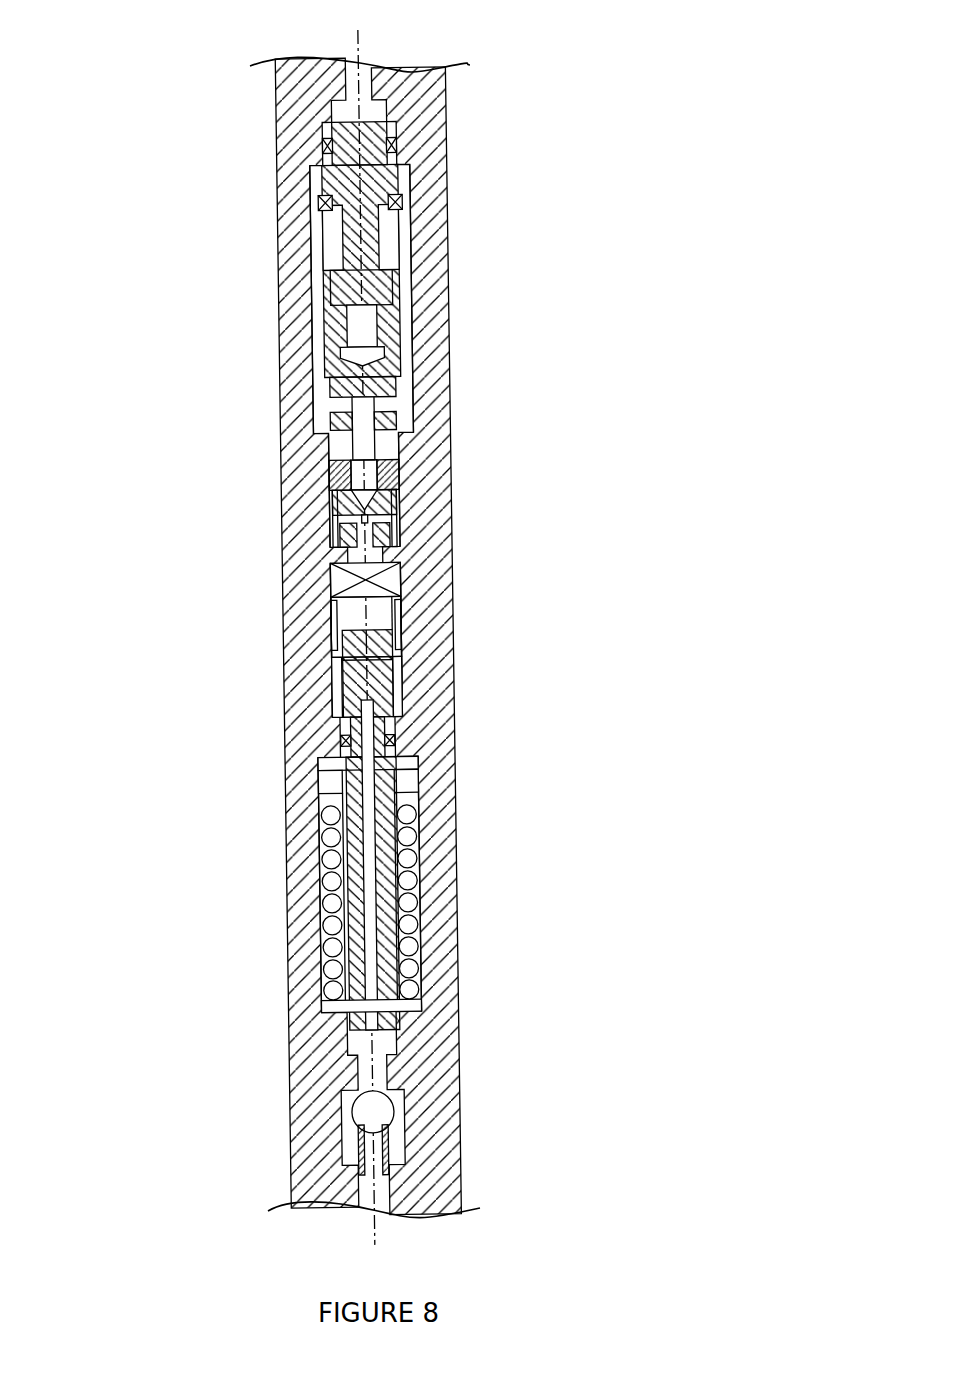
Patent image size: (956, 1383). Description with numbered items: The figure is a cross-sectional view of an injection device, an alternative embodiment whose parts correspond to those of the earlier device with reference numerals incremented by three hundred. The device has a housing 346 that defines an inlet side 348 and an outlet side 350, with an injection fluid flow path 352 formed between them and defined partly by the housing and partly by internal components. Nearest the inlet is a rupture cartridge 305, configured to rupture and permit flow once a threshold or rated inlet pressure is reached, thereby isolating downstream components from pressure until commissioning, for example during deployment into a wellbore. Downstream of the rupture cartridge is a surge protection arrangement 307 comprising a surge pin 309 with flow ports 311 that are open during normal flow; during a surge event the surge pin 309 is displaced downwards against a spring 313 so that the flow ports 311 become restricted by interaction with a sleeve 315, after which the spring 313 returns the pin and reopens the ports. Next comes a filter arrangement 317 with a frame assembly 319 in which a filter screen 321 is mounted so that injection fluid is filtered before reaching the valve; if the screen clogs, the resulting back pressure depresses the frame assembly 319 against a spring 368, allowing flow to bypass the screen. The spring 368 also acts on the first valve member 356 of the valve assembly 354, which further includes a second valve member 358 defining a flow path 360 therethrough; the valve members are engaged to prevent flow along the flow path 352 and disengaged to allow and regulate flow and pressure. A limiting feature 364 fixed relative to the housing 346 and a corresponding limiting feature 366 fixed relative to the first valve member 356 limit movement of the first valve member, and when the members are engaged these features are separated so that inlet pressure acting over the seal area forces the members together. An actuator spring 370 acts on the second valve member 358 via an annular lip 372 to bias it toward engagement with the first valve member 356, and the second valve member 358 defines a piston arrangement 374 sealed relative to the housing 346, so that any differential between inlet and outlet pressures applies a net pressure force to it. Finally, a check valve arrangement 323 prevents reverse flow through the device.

The rupture cartridge 305 is at (428, 165).
The surge protection arrangement 307 is at (430, 470).
The surge pin 309 is at (338, 490).
The flow ports 311 is at (372, 518).
The spring 313 is at (340, 520).
The sleeve 315 is at (382, 532).
The filter arrangement 317 is at (418, 585).
The frame assembly 319 is at (340, 573).
The filter screen 321 is at (340, 598).
The check valve arrangement 323 is at (435, 1110).
The housing 346 is at (440, 78).
The inlet side 348 is at (358, 66).
The outlet side 350 is at (375, 1212).
The flow path 352 is at (360, 417).
The valve assembly 354 is at (288, 741).
The first valve member 356 is at (398, 672).
The second valve member 358 is at (384, 838).
The flow path 360 is at (362, 922).
The limiting feature 364 is at (338, 684).
The corresponding limiting feature 366 is at (338, 660).
The spring 368 is at (400, 622).
The actuator spring 370 is at (412, 905).
The annular lip 372 is at (412, 780).
The piston arrangement 374 is at (415, 742).